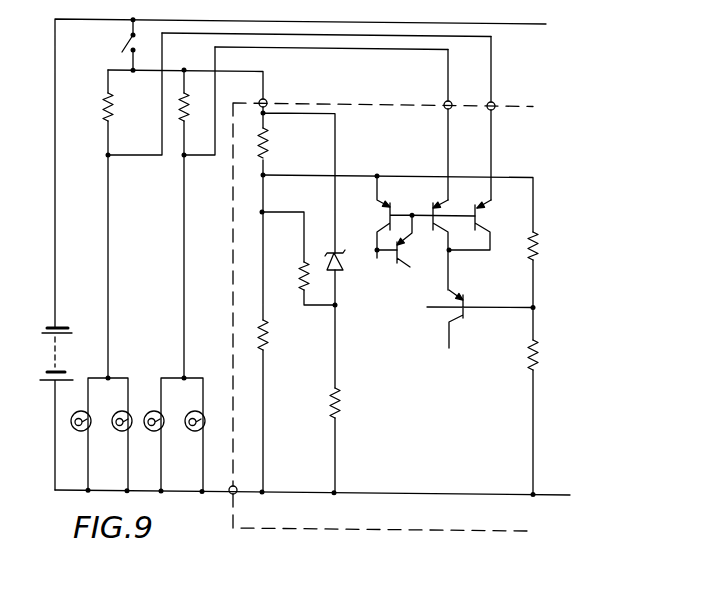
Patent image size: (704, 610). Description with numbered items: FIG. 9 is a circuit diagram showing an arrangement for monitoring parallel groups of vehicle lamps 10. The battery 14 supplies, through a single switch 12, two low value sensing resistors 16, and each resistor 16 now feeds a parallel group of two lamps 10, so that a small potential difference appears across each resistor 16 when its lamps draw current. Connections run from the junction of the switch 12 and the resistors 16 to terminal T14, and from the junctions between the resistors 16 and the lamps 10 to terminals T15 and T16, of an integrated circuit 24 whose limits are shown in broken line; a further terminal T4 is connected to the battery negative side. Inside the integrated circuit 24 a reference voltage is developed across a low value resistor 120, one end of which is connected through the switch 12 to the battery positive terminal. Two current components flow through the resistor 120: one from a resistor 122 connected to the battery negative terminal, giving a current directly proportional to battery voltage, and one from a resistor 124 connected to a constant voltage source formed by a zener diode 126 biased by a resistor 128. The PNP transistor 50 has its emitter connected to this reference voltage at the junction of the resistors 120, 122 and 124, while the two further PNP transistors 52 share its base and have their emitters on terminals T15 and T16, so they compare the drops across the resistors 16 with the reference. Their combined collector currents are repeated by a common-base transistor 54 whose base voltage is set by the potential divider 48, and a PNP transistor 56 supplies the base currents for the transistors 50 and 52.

The lamps 10 is at (190, 416).
The switch 12 is at (124, 42).
The battery 14 is at (57, 328).
The low value resistor 16 is at (174, 109).
The integrated circuit 24 is at (330, 530).
The potential divider 48 is at (546, 282).
The PNP transistor 50 is at (386, 209).
The further PNP transistors 52 is at (486, 206).
The further transistor 54 is at (470, 299).
The further PNP transistor 56 is at (413, 256).
The low value resistor 120 is at (268, 149).
The resistor 122 is at (267, 336).
The resistor 124 is at (298, 264).
The zener diode 126 is at (338, 270).
The resistor 128 is at (340, 402).
The terminal T4 is at (229, 493).
The terminal T14 is at (266, 99).
The terminal T15 is at (445, 101).
The terminal T16 is at (494, 102).